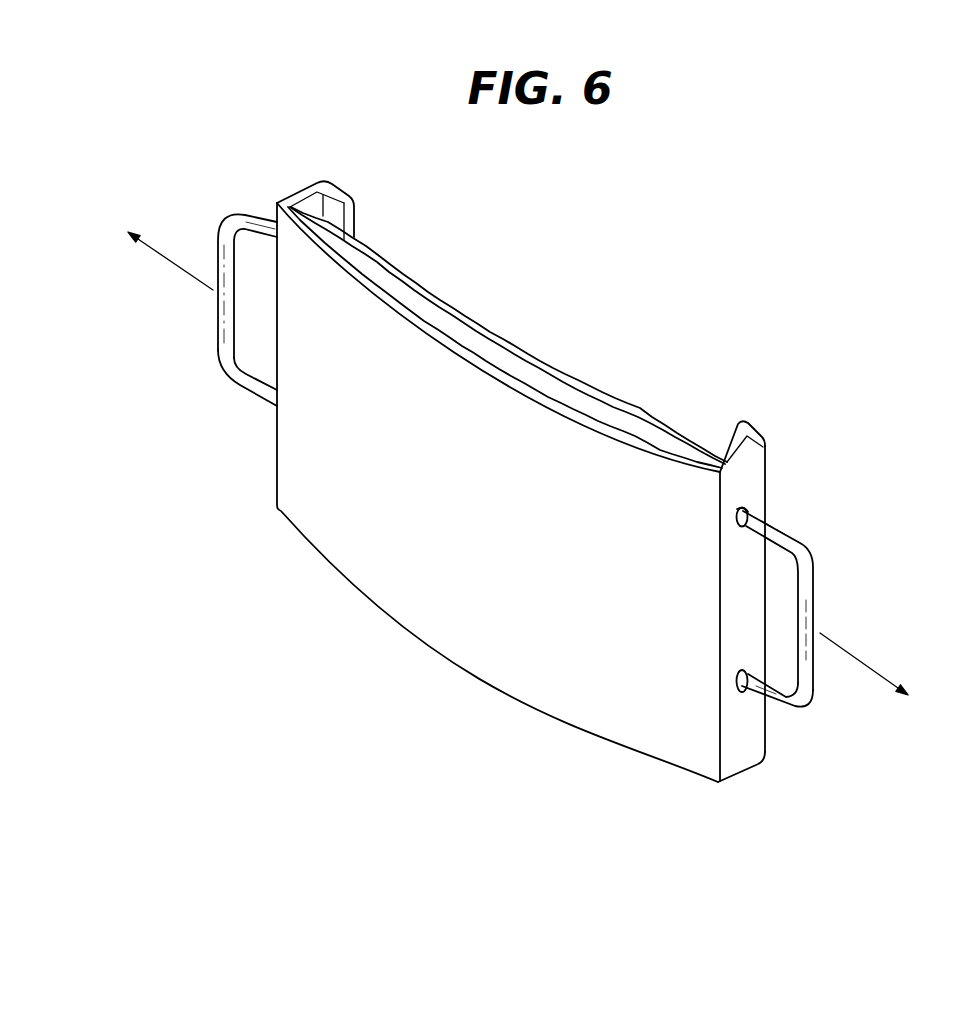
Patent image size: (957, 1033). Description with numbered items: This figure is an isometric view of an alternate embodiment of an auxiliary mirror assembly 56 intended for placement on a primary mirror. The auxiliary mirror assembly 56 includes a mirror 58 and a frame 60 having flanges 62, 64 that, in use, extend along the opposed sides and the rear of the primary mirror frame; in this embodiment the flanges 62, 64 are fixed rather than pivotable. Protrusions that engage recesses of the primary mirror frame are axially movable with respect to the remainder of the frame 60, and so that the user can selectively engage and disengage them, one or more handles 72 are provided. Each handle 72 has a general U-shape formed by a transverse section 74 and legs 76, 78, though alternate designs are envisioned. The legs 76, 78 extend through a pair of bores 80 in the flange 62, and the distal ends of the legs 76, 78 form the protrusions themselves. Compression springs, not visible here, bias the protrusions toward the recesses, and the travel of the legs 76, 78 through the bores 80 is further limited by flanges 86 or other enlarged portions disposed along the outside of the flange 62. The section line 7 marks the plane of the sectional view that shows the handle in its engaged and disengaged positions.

The auxiliary mirror assembly 56 is at (627, 262).
The mirror 58 is at (451, 503).
The frame 60 is at (743, 775).
The flange 62 is at (302, 197).
The flange 64 is at (343, 197).
The handle 72 is at (800, 696).
The transverse section 74 is at (808, 578).
The leg 76 is at (250, 390).
The leg 78 is at (260, 221).
The bore 80 is at (743, 527).
The flange 86 is at (748, 510).
The section line 7- 7 is at (797, 369).